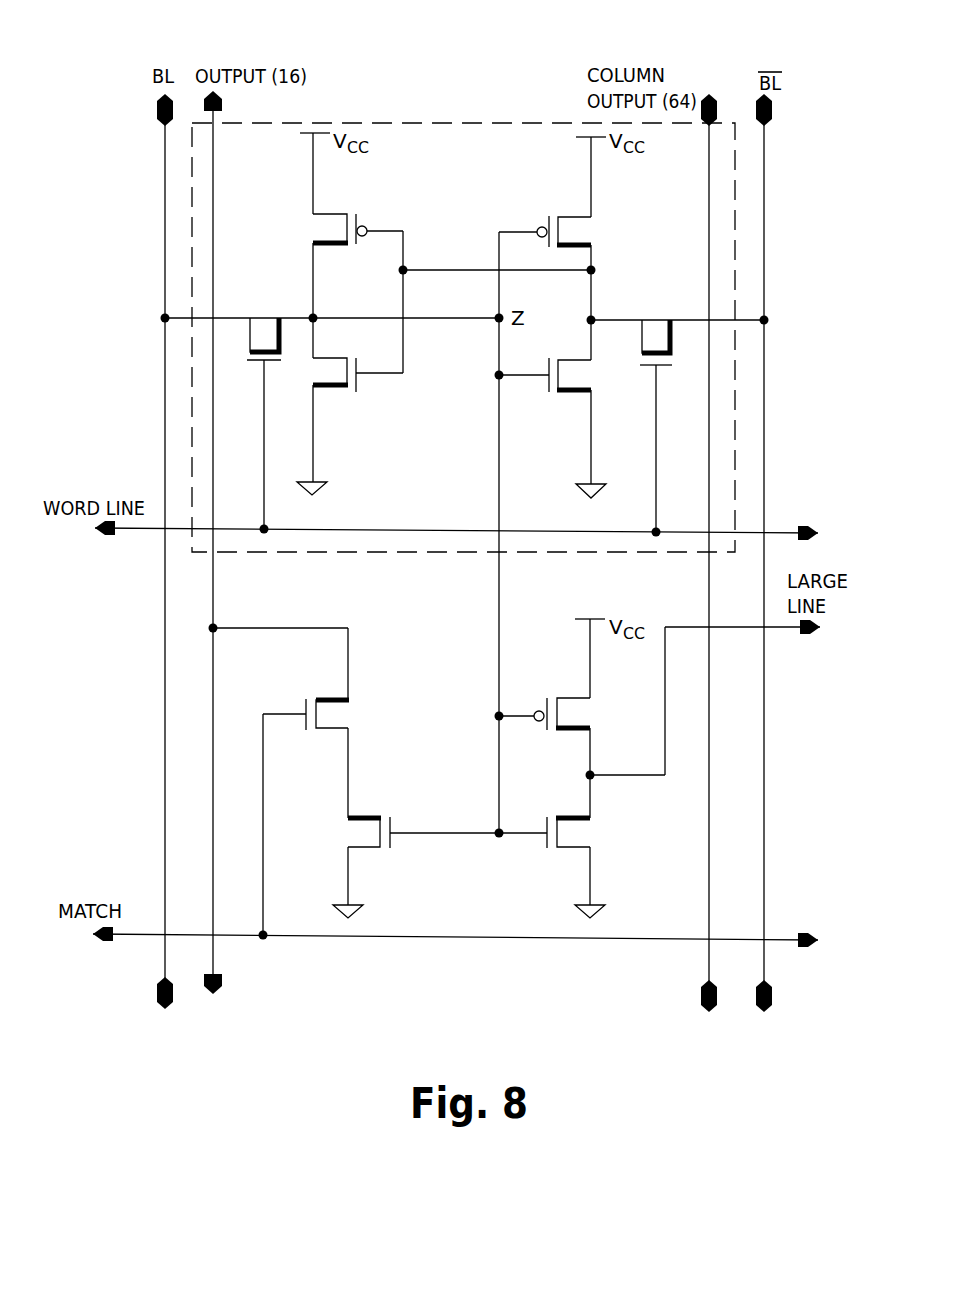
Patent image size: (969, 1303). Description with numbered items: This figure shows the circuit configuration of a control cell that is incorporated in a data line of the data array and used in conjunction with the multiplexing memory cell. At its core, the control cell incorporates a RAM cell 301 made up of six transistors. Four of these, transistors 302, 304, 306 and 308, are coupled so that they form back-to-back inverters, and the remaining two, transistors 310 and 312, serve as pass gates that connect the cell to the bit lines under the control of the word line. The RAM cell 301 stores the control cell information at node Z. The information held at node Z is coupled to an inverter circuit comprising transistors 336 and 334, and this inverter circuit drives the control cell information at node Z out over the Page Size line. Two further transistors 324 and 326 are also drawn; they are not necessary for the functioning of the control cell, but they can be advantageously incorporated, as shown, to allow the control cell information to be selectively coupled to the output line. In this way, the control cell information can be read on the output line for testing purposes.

The RAM cell 301 is at (450, 139).
The transistor 302 is at (340, 229).
The transistor 304 is at (561, 231).
The transistor 306 is at (343, 375).
The transistor 308 is at (561, 375).
The transistor 310 is at (264, 409).
The transistor 312 is at (656, 413).
The transistor 324 is at (406, 832).
The transistor 326 is at (322, 817).
The transistor 334 is at (562, 832).
The transistor 336 is at (561, 714).